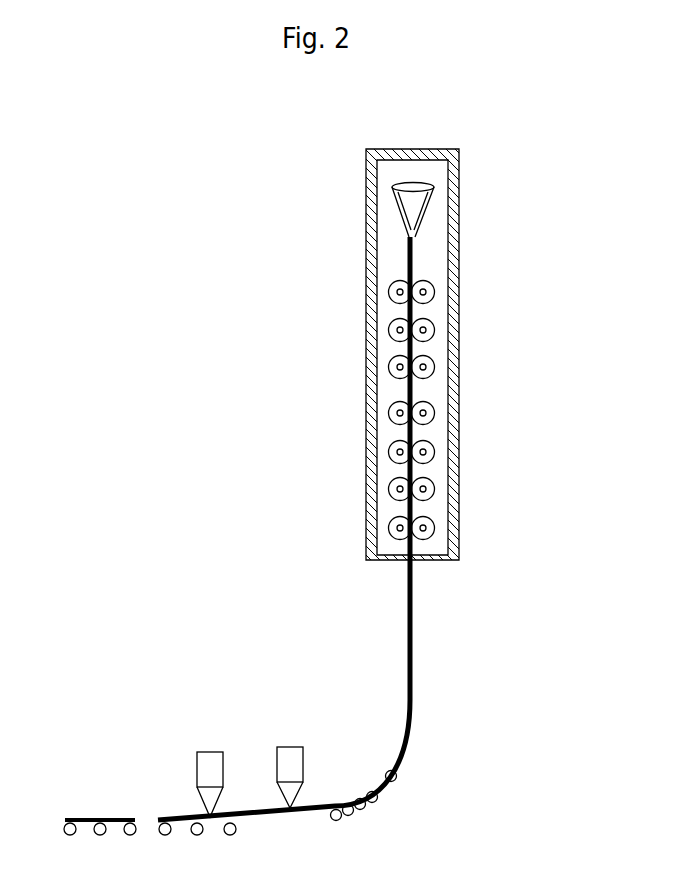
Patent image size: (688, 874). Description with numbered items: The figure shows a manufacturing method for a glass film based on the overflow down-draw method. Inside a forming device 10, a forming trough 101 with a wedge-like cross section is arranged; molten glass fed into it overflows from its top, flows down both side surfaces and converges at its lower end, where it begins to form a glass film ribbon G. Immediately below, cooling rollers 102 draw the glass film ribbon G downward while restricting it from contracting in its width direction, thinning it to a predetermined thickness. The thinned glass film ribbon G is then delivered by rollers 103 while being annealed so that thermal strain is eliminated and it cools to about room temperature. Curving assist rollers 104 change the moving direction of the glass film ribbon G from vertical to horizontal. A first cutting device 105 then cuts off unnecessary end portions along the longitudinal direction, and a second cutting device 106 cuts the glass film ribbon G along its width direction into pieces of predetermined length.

The forming device 10 is at (510, 156).
The forming trough 101 is at (405, 203).
The cooling rollers 102 is at (389, 292).
The rollers 103 is at (389, 330).
The curving assist rollers 104 is at (381, 805).
The first cutting device 105 is at (293, 728).
The second cutting device 106 is at (215, 734).
The glass film ribbon G is at (406, 622).